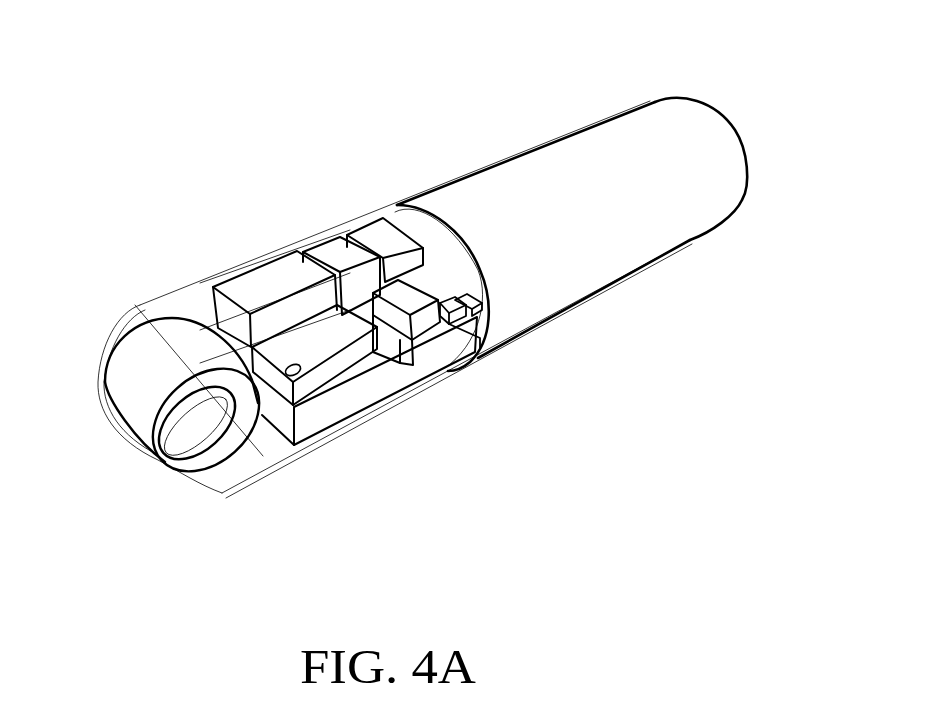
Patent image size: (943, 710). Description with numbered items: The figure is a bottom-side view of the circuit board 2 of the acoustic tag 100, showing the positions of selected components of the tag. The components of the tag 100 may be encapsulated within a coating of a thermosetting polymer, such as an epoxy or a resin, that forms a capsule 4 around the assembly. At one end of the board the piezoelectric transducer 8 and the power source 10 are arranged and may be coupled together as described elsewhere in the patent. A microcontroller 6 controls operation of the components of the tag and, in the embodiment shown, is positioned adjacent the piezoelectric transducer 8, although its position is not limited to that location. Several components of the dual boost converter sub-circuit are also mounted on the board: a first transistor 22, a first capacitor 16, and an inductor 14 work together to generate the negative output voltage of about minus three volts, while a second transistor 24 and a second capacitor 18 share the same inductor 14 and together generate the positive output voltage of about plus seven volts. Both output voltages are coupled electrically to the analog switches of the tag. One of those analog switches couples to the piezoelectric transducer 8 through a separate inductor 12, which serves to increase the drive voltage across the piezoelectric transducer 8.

The acoustic tag 100 is at (193, 101).
The circuit board 2 is at (300, 418).
The capsule 4 is at (147, 307).
The microcontroller 6 is at (318, 382).
The piezoelectric transducer 8 is at (146, 394).
The power source 10 is at (660, 218).
The inductor 12 is at (233, 291).
The inductor 14 is at (457, 352).
The first capacitor 16 is at (330, 251).
The second capacitor 18 is at (382, 229).
The first transistor 22 is at (425, 327).
The second transistor 24 is at (475, 330).